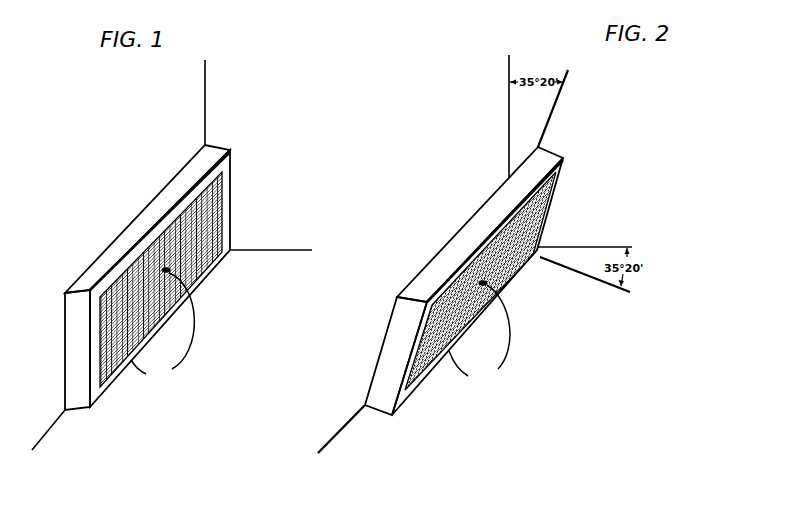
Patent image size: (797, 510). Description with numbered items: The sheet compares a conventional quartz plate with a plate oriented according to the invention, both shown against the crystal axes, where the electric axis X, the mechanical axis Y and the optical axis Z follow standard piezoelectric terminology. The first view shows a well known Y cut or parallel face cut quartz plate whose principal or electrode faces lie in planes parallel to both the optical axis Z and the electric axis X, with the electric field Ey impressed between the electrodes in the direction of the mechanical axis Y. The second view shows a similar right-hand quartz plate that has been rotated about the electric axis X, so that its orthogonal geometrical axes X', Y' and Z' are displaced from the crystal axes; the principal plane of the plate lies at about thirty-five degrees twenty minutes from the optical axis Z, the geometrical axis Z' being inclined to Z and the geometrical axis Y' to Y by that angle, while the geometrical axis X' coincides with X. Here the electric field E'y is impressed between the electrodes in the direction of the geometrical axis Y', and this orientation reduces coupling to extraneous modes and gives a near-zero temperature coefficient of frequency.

In FIG. 1, the electric axis X is at (41, 439).
In FIG. 2, the electric axis X is at (344, 443).
In FIG. 1, the mechanical axis Y is at (277, 252).
In FIG. 2, the mechanical axis Y is at (648, 247).
In FIG. 1, the optical axis Z is at (204, 92).
In FIG. 2, the optical axis Z is at (542, 107).
In FIG. 2, the X' geometrical axis X' is at (303, 493).
In FIG. 2, the Y' geometrical axis Y' is at (592, 279).
In FIG. 2, the Z' geometrical axis Z' is at (556, 100).
In FIG. 1, the electric field in the Y direction Ey is at (162, 328).
In FIG. 2, the electric field in the Y' direction E'y is at (479, 336).